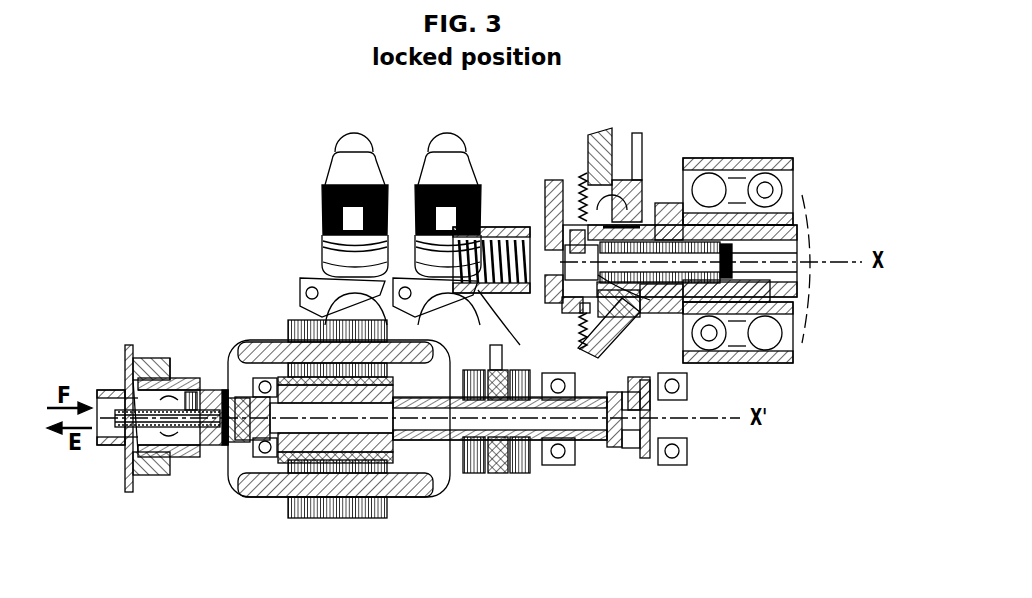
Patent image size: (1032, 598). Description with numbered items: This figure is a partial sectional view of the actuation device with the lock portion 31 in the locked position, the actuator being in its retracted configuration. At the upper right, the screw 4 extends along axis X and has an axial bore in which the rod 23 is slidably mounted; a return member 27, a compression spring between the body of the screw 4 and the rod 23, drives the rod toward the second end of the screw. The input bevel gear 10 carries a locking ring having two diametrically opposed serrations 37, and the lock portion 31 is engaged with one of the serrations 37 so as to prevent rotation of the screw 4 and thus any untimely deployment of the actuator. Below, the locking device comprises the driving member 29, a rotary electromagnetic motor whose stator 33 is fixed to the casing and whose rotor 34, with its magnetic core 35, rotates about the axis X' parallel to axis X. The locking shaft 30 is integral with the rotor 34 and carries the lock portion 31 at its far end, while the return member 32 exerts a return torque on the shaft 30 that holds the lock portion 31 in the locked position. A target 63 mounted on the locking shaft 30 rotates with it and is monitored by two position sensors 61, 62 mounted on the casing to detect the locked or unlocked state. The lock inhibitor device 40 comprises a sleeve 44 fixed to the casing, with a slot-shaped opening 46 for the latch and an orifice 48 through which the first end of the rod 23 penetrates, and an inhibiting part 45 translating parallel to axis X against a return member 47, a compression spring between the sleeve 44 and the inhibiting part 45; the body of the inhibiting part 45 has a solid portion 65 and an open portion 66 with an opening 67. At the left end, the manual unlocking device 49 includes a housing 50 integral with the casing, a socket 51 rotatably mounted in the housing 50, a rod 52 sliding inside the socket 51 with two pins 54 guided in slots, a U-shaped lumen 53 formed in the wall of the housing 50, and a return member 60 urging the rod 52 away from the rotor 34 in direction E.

The screw 4 is at (798, 294).
The input bevel gear 10 is at (588, 158).
The rod 23 is at (804, 252).
The return member 27 is at (648, 247).
The driving member 29 is at (260, 505).
The locking shaft 30 is at (593, 437).
The lock portion 31 is at (635, 440).
The return member 32 is at (523, 467).
The stator 33 is at (337, 487).
The rotor 34 is at (315, 443).
The magnetic core 35 is at (363, 460).
The serrations 37 is at (637, 373).
The lock inhibitor device 40 is at (509, 222).
The sleeve 44 is at (484, 258).
The inhibiting part 45 is at (515, 290).
The opening 46 is at (548, 275).
The return member 47 is at (512, 222).
The orifice 48 is at (591, 242).
The manual unlocking device 49 is at (148, 497).
The housing 50 is at (128, 468).
The socket 51 is at (153, 407).
The rod 52 is at (153, 428).
The lumen 53 is at (176, 438).
The pins 54 is at (187, 417).
The return member 60 is at (218, 430).
The position sensor 61 is at (338, 175).
The position sensor 62 is at (433, 172).
The target 63 is at (500, 362).
The solid portion 65 is at (487, 300).
The open portion 66 is at (556, 237).
The opening 67 is at (600, 290).